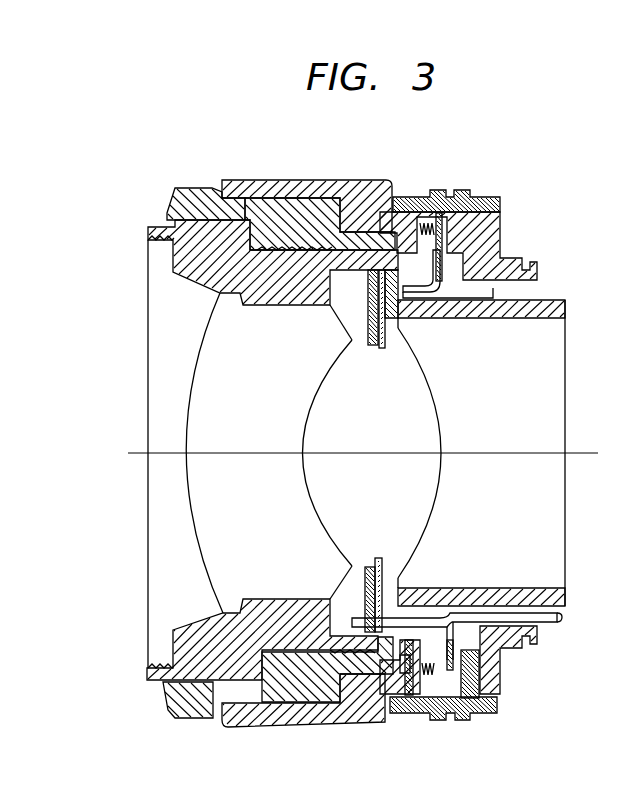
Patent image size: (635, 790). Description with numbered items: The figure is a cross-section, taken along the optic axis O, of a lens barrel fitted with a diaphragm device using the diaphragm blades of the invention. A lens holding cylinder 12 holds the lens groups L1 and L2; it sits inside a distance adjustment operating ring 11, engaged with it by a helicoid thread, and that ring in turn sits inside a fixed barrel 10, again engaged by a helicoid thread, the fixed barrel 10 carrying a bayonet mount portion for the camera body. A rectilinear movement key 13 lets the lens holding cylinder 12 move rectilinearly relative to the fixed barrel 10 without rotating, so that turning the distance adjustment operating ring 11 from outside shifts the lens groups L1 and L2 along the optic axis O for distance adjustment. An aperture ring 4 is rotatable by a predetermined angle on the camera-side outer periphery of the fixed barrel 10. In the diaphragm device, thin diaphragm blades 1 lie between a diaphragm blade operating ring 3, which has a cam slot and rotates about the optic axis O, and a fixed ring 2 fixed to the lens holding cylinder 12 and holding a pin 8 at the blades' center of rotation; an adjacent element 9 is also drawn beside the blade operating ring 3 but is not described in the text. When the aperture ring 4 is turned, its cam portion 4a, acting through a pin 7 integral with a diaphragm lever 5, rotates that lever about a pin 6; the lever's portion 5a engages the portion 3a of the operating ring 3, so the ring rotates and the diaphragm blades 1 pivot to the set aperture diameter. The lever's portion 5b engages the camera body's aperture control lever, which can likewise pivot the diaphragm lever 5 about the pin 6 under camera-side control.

The diaphragm blades 1 is at (376, 350).
The fixed ring 2 is at (368, 343).
The diaphragm blade operating ring 3 is at (383, 350).
The portion of the diaphragm blade operating ring 3a is at (419, 715).
The aperture ring 4 is at (483, 198).
The cam portion of the aperture ring 4a is at (497, 675).
The diaphragm lever 5 is at (537, 624).
The portion of the diaphragm lever 5a is at (393, 717).
The portion of the diaphragm lever 5b is at (558, 620).
The pin 6 is at (456, 716).
The pin 7 is at (480, 660).
The pin 8 is at (366, 580).
The spacer ring 9 is at (390, 316).
The fixed barrel 10 is at (282, 188).
The distance adjustment operating ring 11 is at (198, 195).
The lens holding cylinder 12 is at (183, 254).
The rectilinear movement key 13 is at (440, 272).
The lens group L1 is at (212, 348).
The lens group L2 is at (552, 367).
The optic axis O is at (357, 453).